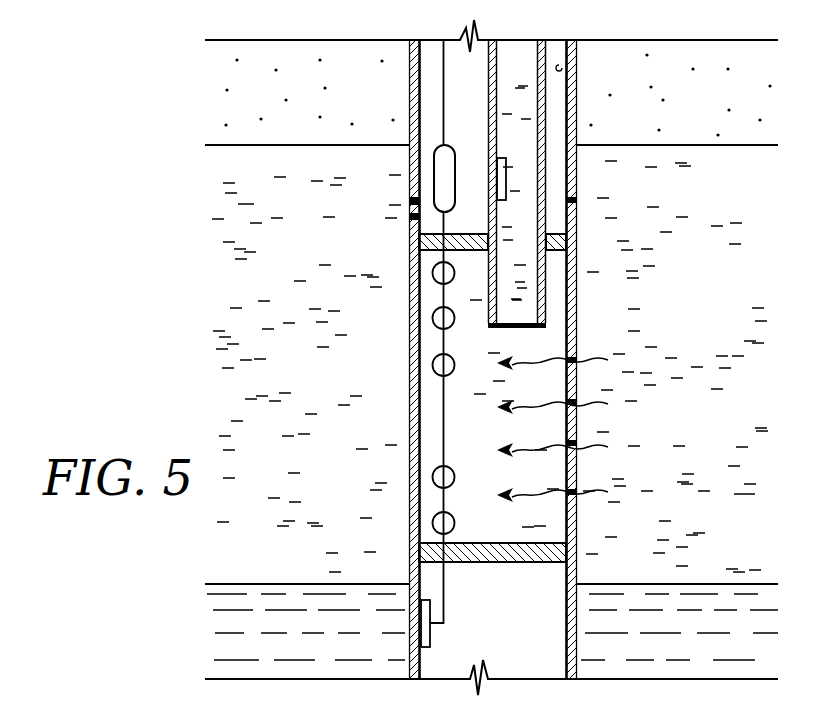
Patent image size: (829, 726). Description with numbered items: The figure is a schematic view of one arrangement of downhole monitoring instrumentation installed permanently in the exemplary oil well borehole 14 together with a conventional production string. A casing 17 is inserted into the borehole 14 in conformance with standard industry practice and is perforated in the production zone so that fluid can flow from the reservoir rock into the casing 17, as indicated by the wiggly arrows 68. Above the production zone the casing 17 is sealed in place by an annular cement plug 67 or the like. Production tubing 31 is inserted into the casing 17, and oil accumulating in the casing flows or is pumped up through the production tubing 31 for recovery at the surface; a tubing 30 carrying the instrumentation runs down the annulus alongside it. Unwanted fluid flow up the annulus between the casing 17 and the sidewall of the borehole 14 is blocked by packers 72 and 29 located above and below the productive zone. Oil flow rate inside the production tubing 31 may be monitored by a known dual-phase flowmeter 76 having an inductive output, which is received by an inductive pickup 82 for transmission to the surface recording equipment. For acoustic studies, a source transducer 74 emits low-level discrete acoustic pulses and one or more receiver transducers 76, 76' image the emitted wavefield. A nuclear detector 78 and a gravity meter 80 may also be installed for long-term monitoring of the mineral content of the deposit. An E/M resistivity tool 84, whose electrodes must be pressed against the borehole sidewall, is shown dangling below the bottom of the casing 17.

The borehole 14 is at (577, 94).
The casing 17 is at (562, 65).
The packer 29 is at (548, 548).
The tubing 30 is at (443, 100).
The production tubing 31 is at (546, 120).
The annular cement plug 67 is at (572, 208).
The wiggly arrows 68 is at (612, 399).
The packer 72 is at (556, 246).
The source transducer 74 is at (443, 523).
The dual-phase flowmeter 76 is at (492, 323).
The receiver transducer 76' is at (398, 359).
The nuclear detector 78 is at (443, 318).
The gravity meter 80 is at (443, 273).
The inductive pickup 82 is at (443, 187).
The E/M resistivity tool 84 is at (421, 612).